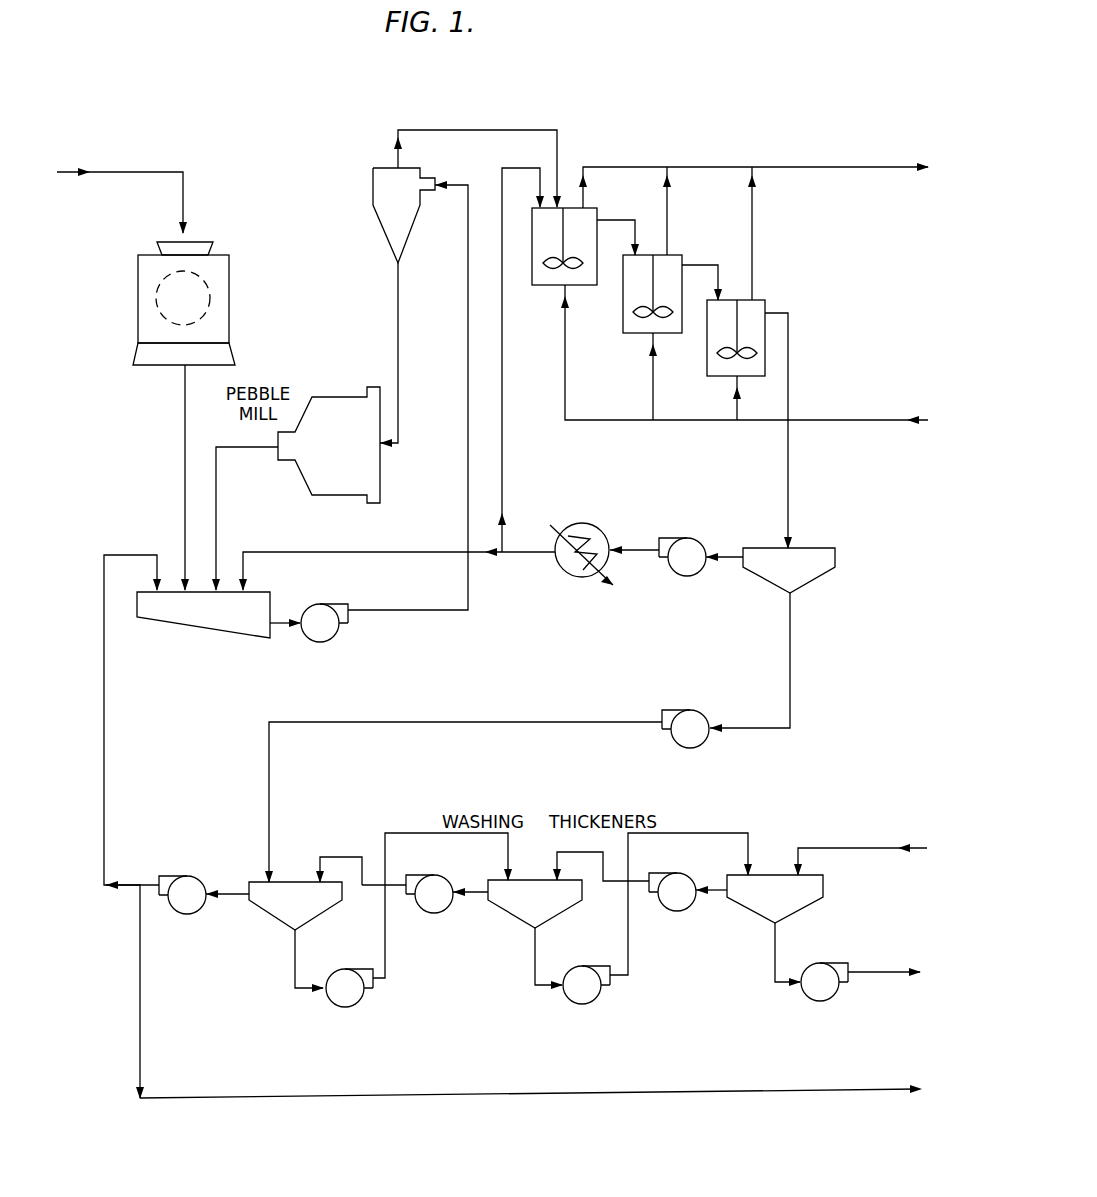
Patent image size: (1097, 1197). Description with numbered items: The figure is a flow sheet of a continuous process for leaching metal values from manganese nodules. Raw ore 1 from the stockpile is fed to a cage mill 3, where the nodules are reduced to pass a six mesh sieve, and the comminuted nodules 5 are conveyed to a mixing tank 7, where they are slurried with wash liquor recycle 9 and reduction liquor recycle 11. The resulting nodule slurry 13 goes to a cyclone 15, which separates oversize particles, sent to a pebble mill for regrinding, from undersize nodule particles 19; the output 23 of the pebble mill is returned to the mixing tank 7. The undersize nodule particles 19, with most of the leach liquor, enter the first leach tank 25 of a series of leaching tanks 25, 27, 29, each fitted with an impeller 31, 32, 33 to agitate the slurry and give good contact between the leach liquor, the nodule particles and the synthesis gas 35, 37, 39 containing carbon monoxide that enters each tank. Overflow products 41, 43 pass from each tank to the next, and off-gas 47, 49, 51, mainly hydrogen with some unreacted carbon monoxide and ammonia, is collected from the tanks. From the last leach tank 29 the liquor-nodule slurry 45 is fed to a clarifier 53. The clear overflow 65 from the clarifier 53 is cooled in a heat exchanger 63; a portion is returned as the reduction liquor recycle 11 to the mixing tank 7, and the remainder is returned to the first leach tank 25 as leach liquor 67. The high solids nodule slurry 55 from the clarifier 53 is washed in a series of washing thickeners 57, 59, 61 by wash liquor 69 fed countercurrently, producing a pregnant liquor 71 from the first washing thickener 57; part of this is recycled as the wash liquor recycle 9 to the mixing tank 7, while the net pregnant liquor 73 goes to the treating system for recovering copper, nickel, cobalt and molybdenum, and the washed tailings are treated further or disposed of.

The raw ore 1 is at (113, 172).
The cage mill 3 is at (220, 262).
The comminuted nodules 5 is at (185, 470).
The mixing tank 7 is at (205, 623).
The wash liquor recycle 9 is at (142, 555).
The reduction liquor recycle 11 is at (345, 552).
The nodule slurry 13 is at (432, 610).
The cyclone 15 is at (396, 240).
The undersize nodule particles 19 is at (460, 130).
The output of the pebble mill 23 is at (216, 494).
The first leach tank 25 is at (553, 287).
The second leach tank 27 is at (632, 333).
The last leach tank 29 is at (707, 368).
The impeller 31 is at (563, 232).
The impeller 32 is at (648, 288).
The impeller 33 is at (727, 316).
The synthesis gas 35 is at (565, 393).
The synthesis gas 37 is at (650, 403).
The synthesis gas 39 is at (736, 398).
The overflow product 41 is at (618, 220).
The overflow product 43 is at (696, 265).
The liquor-nodule slurry 45 is at (788, 333).
The off-gas 47 is at (590, 167).
The off-gas 49 is at (668, 200).
The off-gas 51 is at (753, 207).
The clarifier 53 is at (832, 548).
The nodule slurry 55 is at (793, 705).
The first washing thickener 57 is at (318, 915).
The washing thickener 59 is at (558, 912).
The washing thickener 61 is at (757, 915).
The heat exchanger 63 is at (597, 525).
The clear overflow 65 is at (690, 538).
The leach liquor 67 is at (505, 482).
The wash liquor 69 is at (810, 848).
The pregnant liquor 71 is at (226, 893).
The net pregnant liquor 73 is at (447, 1092).